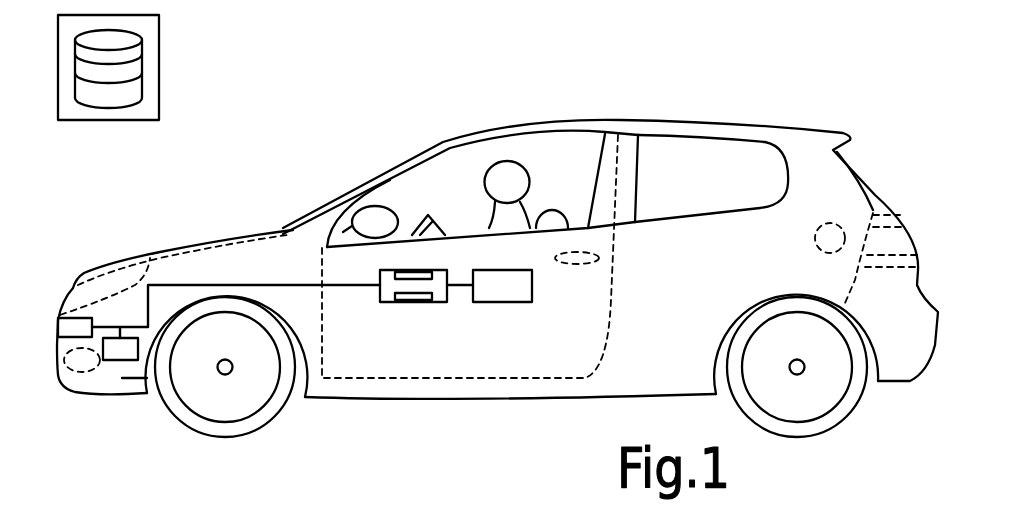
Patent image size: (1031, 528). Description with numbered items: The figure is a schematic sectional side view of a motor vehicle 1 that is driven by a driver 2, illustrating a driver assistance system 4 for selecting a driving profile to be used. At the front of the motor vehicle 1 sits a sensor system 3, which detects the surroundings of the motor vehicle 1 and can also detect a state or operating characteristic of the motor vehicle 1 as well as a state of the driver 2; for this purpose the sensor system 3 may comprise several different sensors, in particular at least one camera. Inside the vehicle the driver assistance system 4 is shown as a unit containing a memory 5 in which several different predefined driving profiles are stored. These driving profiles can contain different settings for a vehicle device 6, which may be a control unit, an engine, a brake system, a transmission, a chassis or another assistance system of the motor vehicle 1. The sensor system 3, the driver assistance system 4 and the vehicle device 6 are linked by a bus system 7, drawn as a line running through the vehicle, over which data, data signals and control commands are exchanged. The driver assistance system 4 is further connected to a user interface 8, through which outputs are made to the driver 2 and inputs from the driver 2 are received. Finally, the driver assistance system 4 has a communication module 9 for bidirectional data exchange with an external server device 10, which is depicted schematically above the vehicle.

The motor vehicle 1 is at (775, 122).
The driver 2 is at (537, 197).
The sensor system 3 is at (63, 318).
The driver assistance system 4 is at (437, 296).
The memory 5 is at (412, 302).
The vehicle device 6 is at (120, 350).
The bus system 7 is at (267, 285).
The user interface 8 is at (508, 296).
The communication module 9 is at (400, 272).
The external server device 10 is at (159, 77).